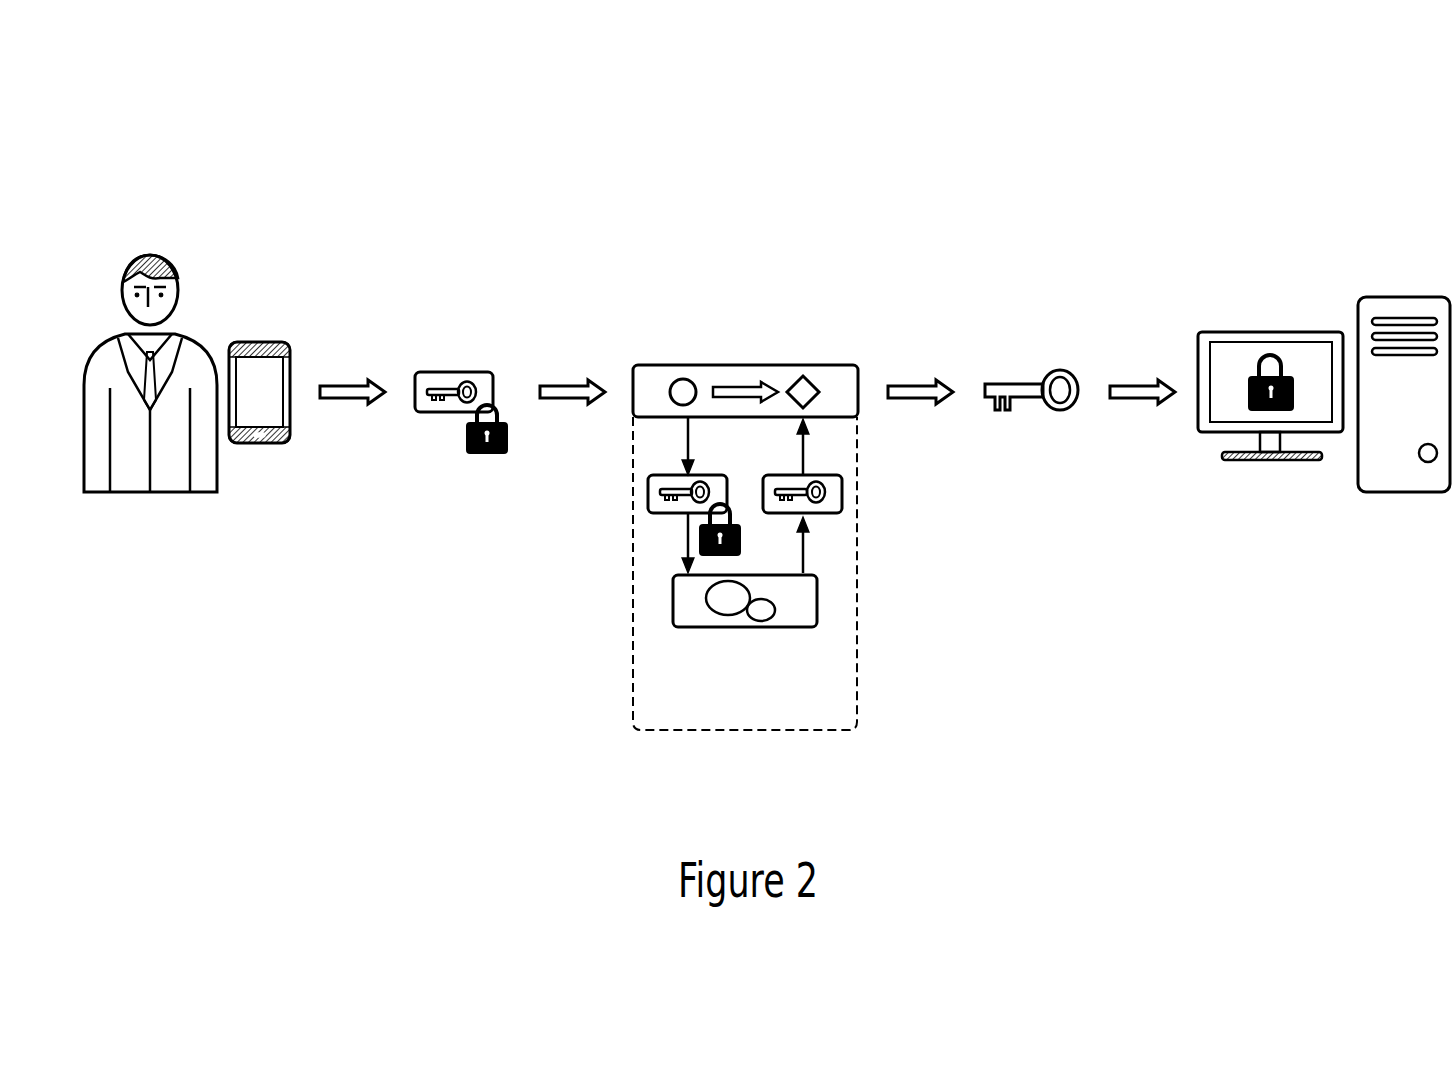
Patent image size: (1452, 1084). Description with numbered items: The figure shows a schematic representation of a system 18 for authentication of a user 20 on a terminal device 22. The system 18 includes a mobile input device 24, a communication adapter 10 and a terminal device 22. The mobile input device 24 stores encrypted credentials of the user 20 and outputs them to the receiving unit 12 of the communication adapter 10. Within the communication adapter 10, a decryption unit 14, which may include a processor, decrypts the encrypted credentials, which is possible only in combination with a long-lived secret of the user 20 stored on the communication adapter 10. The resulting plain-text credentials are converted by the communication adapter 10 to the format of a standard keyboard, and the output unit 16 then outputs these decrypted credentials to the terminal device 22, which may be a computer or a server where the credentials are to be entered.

The communication adapter 10 is at (747, 733).
The receiving unit 12 is at (681, 365).
The decryption unit 14 is at (745, 630).
The output unit 16 is at (802, 365).
The system 18 is at (126, 124).
The user 20 is at (147, 258).
The terminal device 22 is at (1404, 297).
The mobile input device 24 is at (257, 342).